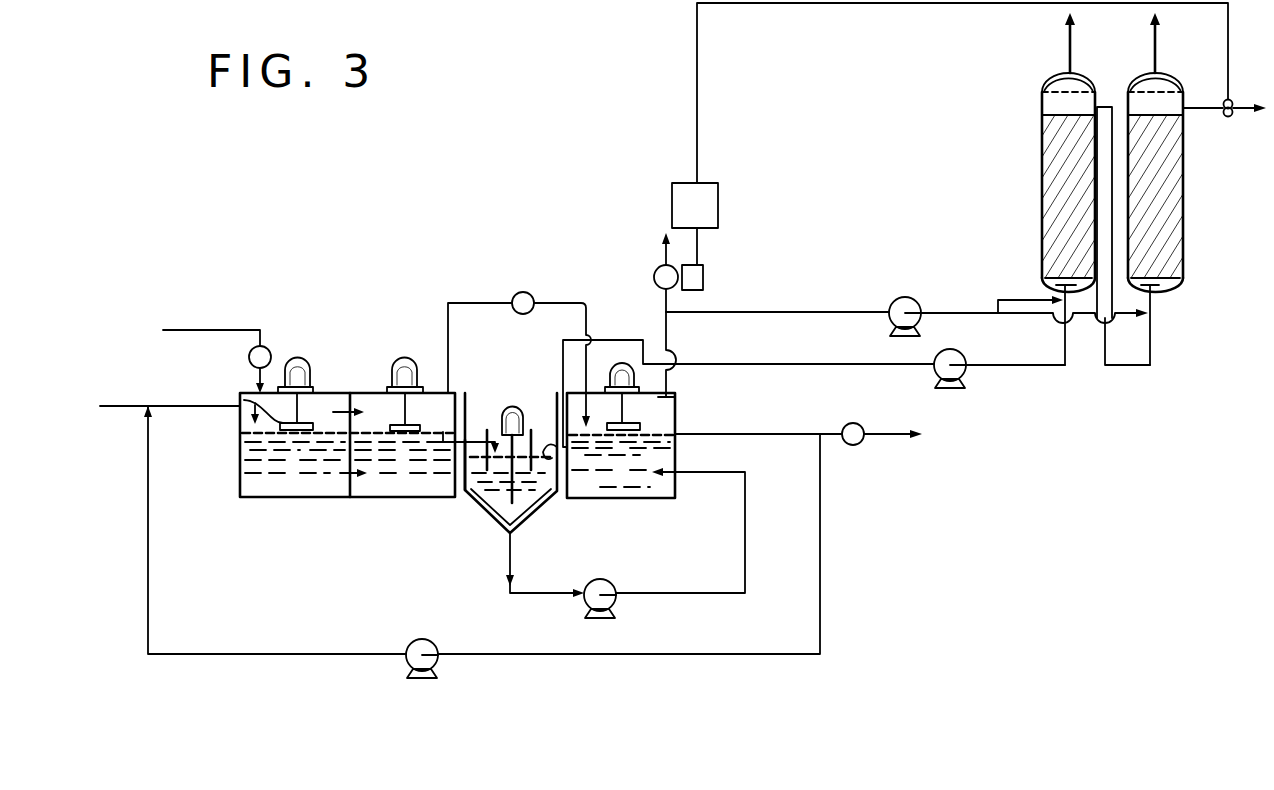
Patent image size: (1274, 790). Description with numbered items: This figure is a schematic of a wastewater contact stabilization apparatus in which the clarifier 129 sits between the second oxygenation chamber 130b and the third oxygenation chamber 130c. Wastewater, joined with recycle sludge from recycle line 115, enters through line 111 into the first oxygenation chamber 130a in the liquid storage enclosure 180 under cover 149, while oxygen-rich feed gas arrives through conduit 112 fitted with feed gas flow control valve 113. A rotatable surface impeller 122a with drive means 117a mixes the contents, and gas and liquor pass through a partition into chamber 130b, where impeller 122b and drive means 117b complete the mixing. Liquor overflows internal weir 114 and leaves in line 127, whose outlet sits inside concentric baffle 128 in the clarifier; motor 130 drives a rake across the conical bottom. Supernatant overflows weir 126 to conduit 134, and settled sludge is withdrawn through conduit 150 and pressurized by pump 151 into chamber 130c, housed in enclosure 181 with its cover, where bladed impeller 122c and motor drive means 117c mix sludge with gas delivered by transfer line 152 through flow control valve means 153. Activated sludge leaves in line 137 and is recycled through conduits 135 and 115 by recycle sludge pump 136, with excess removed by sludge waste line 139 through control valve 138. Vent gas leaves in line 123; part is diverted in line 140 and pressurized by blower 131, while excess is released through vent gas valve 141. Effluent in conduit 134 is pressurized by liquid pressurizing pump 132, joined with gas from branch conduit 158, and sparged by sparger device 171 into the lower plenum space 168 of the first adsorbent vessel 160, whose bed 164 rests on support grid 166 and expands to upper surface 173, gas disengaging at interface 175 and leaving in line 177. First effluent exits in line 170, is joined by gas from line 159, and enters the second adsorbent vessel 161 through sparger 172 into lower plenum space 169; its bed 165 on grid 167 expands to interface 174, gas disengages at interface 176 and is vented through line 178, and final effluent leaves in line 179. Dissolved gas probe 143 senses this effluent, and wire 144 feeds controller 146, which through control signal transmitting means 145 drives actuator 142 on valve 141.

The line 111 is at (195, 390).
The conduit 112 is at (240, 326).
The feed gas flow control valve 113 is at (248, 357).
The internal weir 114 is at (446, 432).
The recycle line 115 is at (253, 653).
The drive means 117a is at (298, 358).
The drive means 117b is at (412, 350).
The motor drive means 117c is at (622, 363).
The rotatable surface impeller 122a is at (253, 402).
The rotatable impeller 122b is at (390, 425).
The rotatable bladed impeller 122c is at (648, 418).
The line 123 is at (667, 340).
The weir 126 is at (555, 470).
The line 127 is at (487, 428).
The concentric baffle 128 is at (531, 428).
The clarifier 129 is at (466, 492).
The motor 130 is at (512, 406).
The first oxygenation chamber 130a is at (250, 472).
The second oxygenation chamber 130b is at (408, 487).
The third oxygenation chamber 130c is at (605, 490).
The blower 131 is at (922, 277).
The liquid pressurizing pump 132 is at (965, 380).
The conduit 134 is at (782, 365).
The conduit 135 is at (822, 572).
The recycle sludge pump 136 is at (425, 628).
The line 137 is at (704, 433).
The control valve 138 is at (872, 418).
The sludge waste line 139 is at (890, 438).
The line 140 is at (785, 312).
The vent gas valve 141 is at (654, 277).
The actuator 142 is at (705, 280).
The dissolved gas probe 143 is at (1232, 106).
The D.O. sensing transmitting means 144 is at (710, 93).
The control signal transmitting means 145 is at (698, 250).
The controller 146 is at (719, 202).
The cover 149 is at (316, 392).
The conduit 150 is at (520, 598).
The pump 151 is at (596, 568).
The transfer line 152 is at (455, 290).
The flow control valve means 153 is at (540, 283).
The branch conduit 158 is at (1016, 300).
The line 159 is at (1088, 325).
The first adsorbent vessel 160 is at (1032, 176).
The second adsorbent vessel 161 is at (1192, 183).
The packing 164 is at (1050, 218).
The packing 165 is at (1175, 252).
The support grid 166 is at (1043, 282).
The grid 167 is at (1175, 287).
The lower plenum space 168 is at (1080, 275).
The lower plenum space 169 is at (1162, 292).
The first effluent water discharge line 170 is at (1105, 107).
The sparger device 171 is at (1068, 288).
The sparger 172 is at (1148, 287).
The upper surface 173 is at (1042, 110).
The interface 174 is at (1185, 108).
The liquid-gas interface 175 is at (1050, 75).
The gas-liquid interface 176 is at (1165, 85).
The line 177 is at (1068, 40).
The gas outlet 178 is at (1160, 40).
The line 179 is at (1222, 116).
The liquid storage enclosure 180 is at (300, 498).
The liquid storage enclosure 181 is at (676, 495).